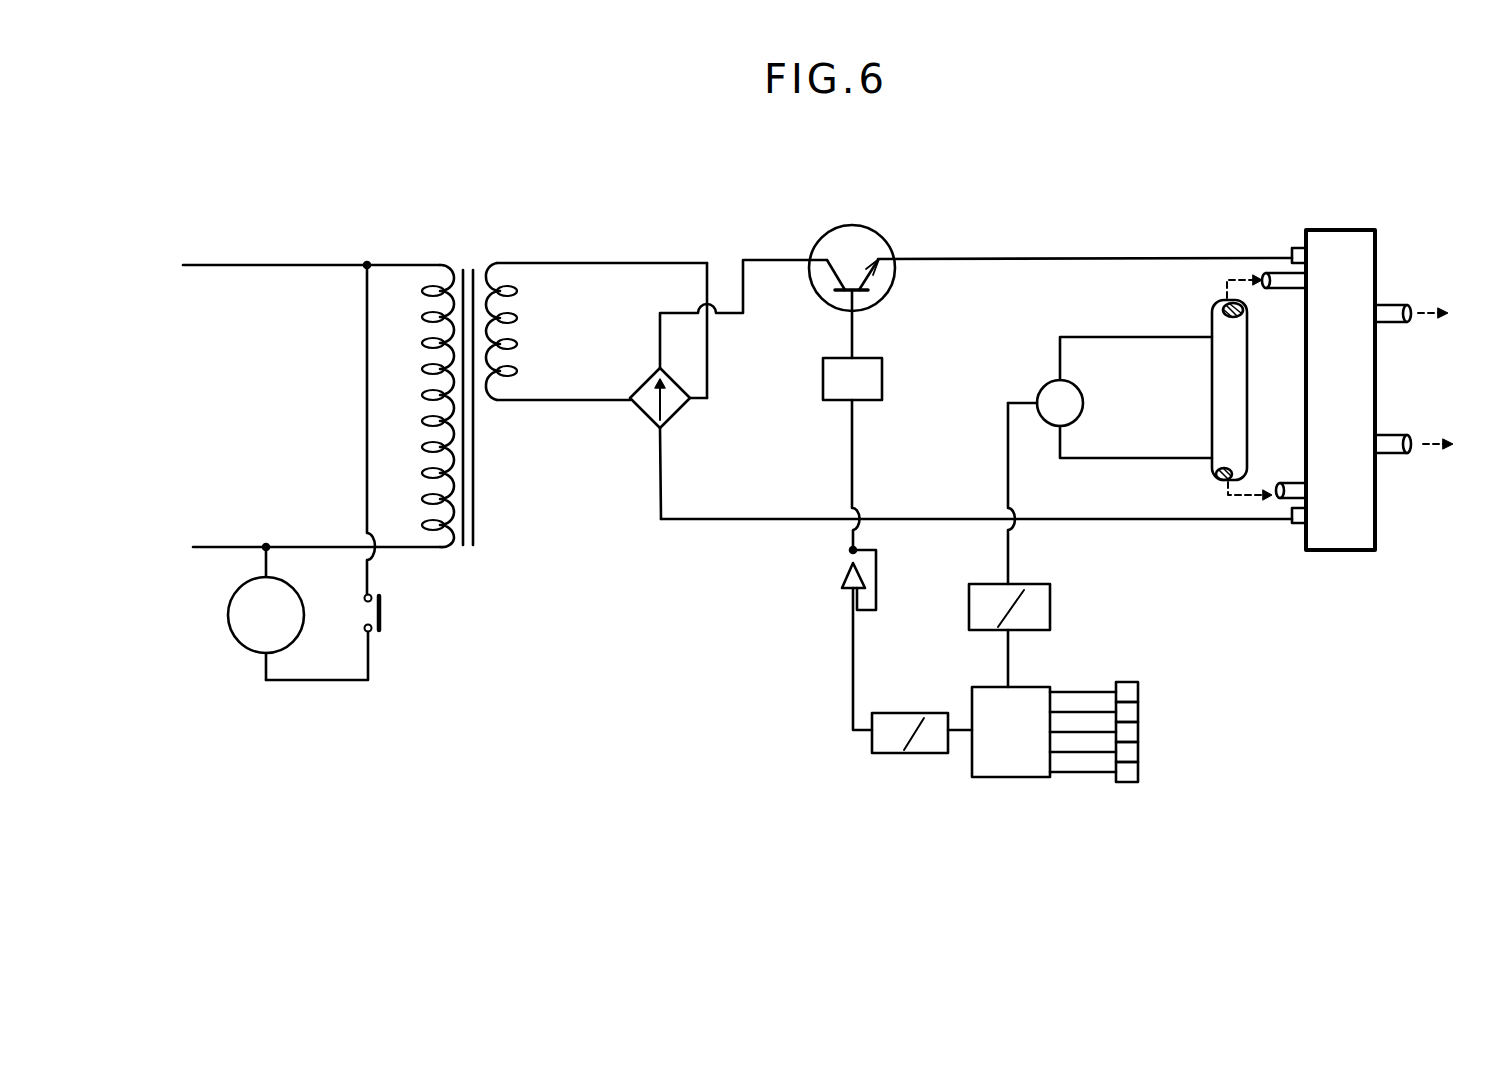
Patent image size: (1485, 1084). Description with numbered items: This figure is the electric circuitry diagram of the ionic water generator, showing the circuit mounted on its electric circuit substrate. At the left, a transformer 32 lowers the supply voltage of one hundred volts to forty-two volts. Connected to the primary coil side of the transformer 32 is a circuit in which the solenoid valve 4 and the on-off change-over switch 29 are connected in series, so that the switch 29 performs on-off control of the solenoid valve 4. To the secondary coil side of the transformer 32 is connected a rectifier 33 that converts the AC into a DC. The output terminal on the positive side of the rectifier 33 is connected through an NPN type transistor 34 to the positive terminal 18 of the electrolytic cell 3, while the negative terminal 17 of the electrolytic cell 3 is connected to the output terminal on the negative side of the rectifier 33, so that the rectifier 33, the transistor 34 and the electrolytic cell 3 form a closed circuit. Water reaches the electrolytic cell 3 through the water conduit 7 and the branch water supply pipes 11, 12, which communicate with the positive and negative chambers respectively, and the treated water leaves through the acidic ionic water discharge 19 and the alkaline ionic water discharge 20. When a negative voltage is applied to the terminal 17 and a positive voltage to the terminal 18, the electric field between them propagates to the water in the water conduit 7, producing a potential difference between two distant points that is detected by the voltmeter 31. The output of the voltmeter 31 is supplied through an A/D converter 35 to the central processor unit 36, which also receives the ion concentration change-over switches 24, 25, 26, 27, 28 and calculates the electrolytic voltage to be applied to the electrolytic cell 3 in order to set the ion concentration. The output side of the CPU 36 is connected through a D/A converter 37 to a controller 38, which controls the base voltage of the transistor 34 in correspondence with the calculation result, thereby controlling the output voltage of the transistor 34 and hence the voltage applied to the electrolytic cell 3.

The electrolytic cell 3 is at (1378, 512).
The solenoid valve 4 is at (228, 625).
The water conduit 7 is at (1249, 386).
The branch water supply pipe 11 is at (1296, 296).
The branch water supply pipe 12 is at (1299, 480).
The negative terminal 17 is at (1304, 525).
The positive terminal 18 is at (1291, 242).
The acidic ionic water discharge 19 is at (1392, 304).
The alkaline ionic water discharge 20 is at (1397, 434).
The ion concentration change-over switch 24 is at (1139, 772).
The ion concentration change-over switch 25 is at (1139, 750).
The ion concentration change-over switch 26 is at (1139, 728).
The ion concentration change-over switch 27 is at (1139, 708).
The ion concentration change-over switch 28 is at (1139, 684).
The on-off change-over switch 29 is at (382, 611).
The voltmeter 31 is at (1082, 395).
The transformer 32 is at (471, 240).
The rectifier 33 is at (641, 419).
The NPN type transistor 34 is at (858, 226).
The A/D converter 35 is at (1038, 583).
The central processor unit (CPU) 36 is at (1030, 778).
The D/A converter 37 is at (917, 756).
The controller 38 is at (884, 383).